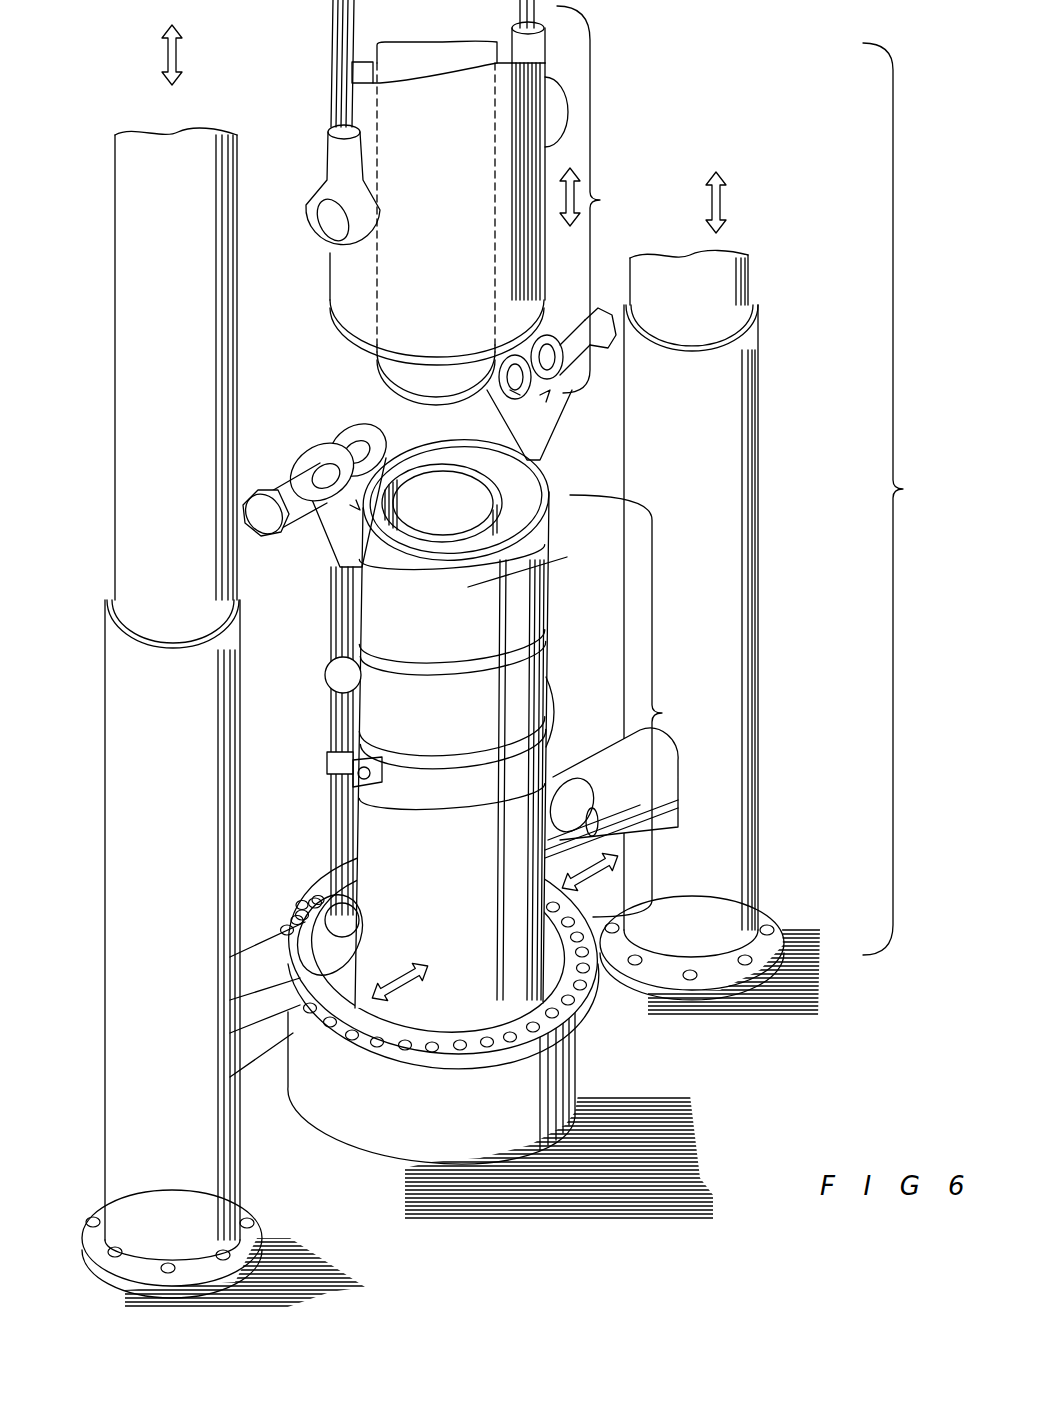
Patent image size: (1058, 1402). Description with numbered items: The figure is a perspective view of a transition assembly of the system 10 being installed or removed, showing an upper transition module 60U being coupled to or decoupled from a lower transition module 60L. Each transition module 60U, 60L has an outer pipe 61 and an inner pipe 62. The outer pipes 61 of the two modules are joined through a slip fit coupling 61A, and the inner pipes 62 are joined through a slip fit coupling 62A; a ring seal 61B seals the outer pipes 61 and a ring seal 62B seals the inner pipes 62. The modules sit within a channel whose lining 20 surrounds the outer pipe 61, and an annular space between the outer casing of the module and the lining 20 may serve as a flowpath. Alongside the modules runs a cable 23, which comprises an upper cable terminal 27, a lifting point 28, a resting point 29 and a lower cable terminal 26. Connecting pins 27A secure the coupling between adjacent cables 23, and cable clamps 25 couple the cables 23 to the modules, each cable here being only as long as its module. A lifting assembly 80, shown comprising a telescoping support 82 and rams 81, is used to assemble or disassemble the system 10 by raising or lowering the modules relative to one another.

The system 10 is at (672, 119).
The lining 20 is at (372, 1100).
The cable 23 is at (343, 98).
The cable clamp 25 is at (328, 760).
The lower cable terminal 26 is at (332, 162).
The upper cable terminal 27 is at (320, 455).
The connecting pin 27A is at (317, 521).
The lifting point 28 is at (327, 664).
The resting point 29 is at (338, 923).
The upper transition module 60U is at (600, 200).
The lower transition module 60L is at (662, 713).
The outer pipe 61 is at (365, 295).
The slip fit coupling 61A is at (468, 592).
The ring seal 61B is at (377, 345).
The inner pipe 62 is at (393, 378).
The slip fit coupling 62A is at (468, 552).
The ring seal 62B is at (400, 392).
The lifting assembly 80 is at (903, 489).
The ram 81 is at (628, 752).
The telescoping support 82 is at (716, 297).